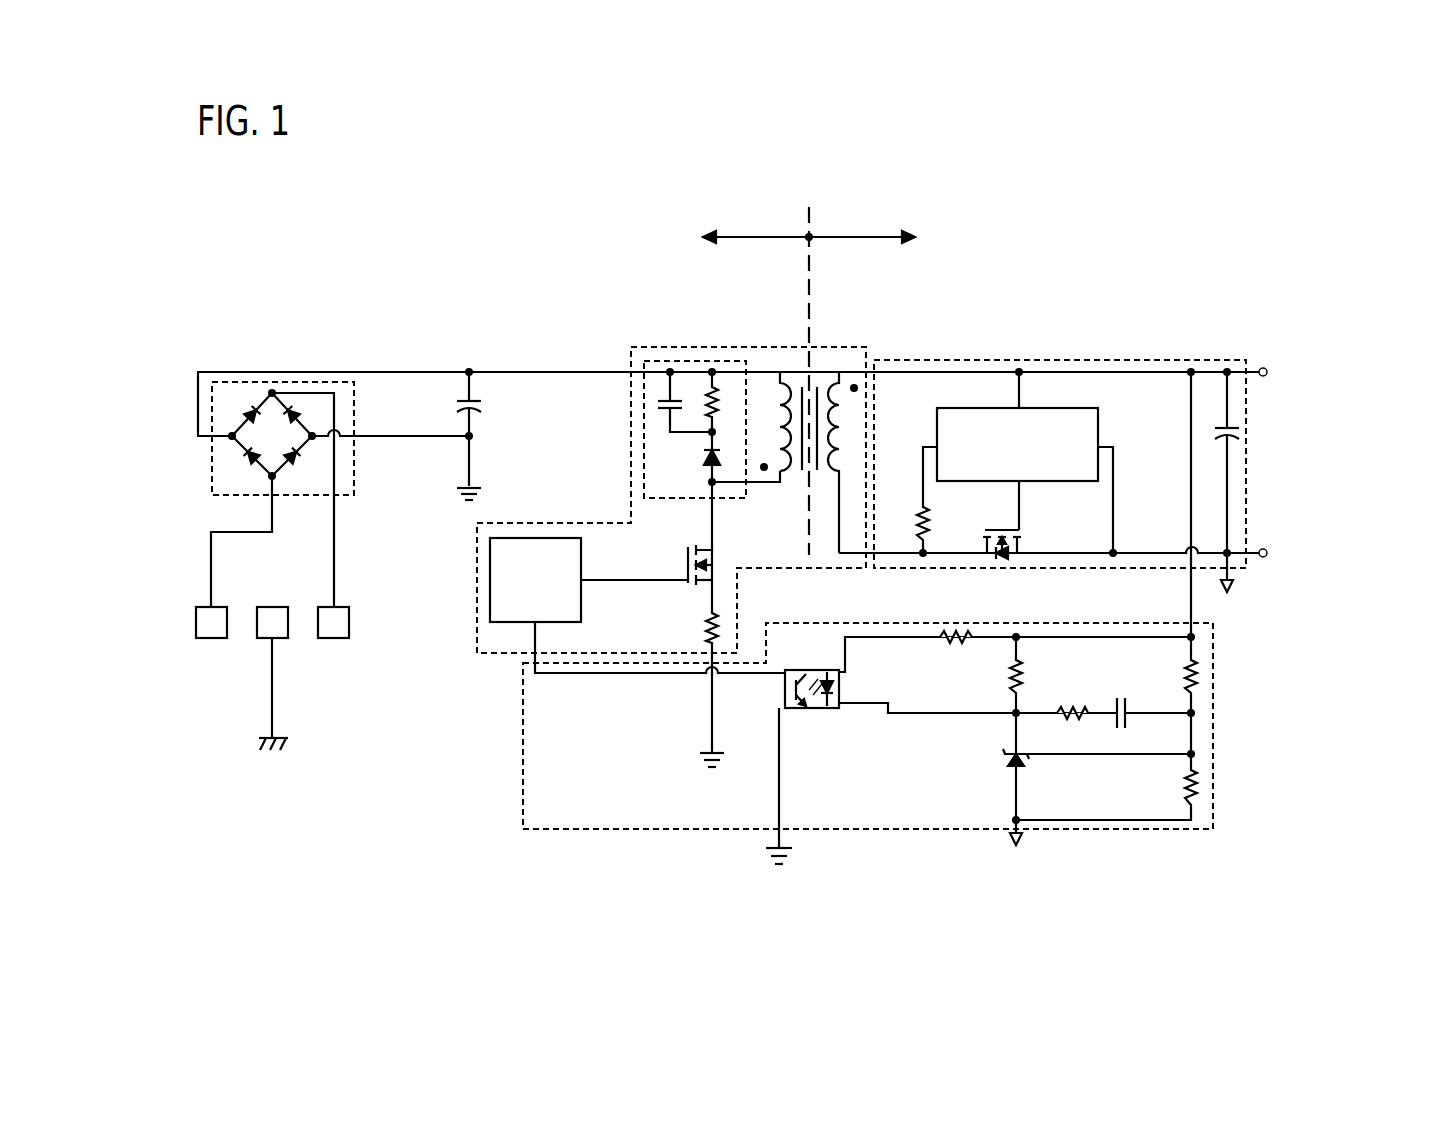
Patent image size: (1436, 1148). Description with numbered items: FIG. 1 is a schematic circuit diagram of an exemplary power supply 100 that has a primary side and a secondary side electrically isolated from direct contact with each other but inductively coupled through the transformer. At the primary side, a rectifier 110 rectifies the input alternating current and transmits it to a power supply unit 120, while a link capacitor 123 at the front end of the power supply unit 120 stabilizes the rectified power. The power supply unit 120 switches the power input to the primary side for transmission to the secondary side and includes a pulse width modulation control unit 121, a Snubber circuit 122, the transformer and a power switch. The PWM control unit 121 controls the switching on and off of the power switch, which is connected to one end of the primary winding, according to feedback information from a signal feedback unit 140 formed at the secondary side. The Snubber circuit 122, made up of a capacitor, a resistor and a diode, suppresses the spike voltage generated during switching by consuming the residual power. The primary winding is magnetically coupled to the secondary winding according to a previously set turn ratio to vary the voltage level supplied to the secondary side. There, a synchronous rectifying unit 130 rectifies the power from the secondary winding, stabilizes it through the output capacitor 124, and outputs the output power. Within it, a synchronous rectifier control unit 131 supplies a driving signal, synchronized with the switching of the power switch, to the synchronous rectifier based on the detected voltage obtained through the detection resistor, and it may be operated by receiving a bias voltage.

The power supply 100 is at (390, 788).
The rectifier 110 is at (354, 470).
The power supply unit 120 is at (848, 346).
The pulse width modulation (PWM) control unit 121 is at (583, 600).
The Snubber circuit 122 is at (716, 361).
The link capacitor (Clink) 123 is at (430, 392).
The capacitor Cout 124 is at (1305, 410).
The synchronous rectifying unit 130 is at (1062, 360).
The synchronous rectifier control unit 131 is at (1098, 430).
The signal feedback unit 140 is at (1213, 735).